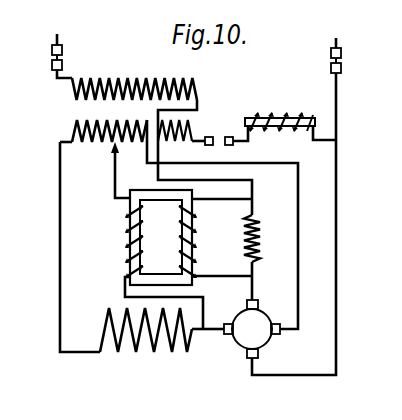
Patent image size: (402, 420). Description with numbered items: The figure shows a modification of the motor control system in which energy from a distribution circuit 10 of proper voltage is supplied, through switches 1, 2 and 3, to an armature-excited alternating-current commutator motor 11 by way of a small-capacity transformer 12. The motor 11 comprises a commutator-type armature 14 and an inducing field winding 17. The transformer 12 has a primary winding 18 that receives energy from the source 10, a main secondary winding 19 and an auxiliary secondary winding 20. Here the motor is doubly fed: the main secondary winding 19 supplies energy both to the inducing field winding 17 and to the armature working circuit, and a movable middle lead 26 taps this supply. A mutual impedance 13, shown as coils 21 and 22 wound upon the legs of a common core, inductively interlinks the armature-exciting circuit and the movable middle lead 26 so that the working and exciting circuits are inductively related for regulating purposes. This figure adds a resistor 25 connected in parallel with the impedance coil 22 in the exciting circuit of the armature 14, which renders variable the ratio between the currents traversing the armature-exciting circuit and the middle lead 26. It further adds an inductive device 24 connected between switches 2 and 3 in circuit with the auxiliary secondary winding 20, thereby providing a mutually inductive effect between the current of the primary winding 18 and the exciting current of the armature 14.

The switch 1 is at (52, 56).
The switch 2 is at (340, 60).
The switch 3 is at (219, 138).
The distribution circuit 10 is at (60, 37).
The alternating-current commutator motor 11 is at (292, 316).
The transformer 12 is at (58, 119).
The mutual impedance 13 is at (170, 248).
The armature 14 is at (252, 329).
The inducing field winding 17 is at (150, 349).
The primary winding 18 is at (136, 82).
The main secondary winding 19 is at (126, 121).
The auxiliary secondary winding 20 is at (194, 122).
The coil 21 is at (127, 246).
The impedance coil 22 is at (196, 251).
The inductive device 24 is at (267, 117).
The resistor 25 is at (259, 244).
The movable middle lead 26 is at (113, 170).